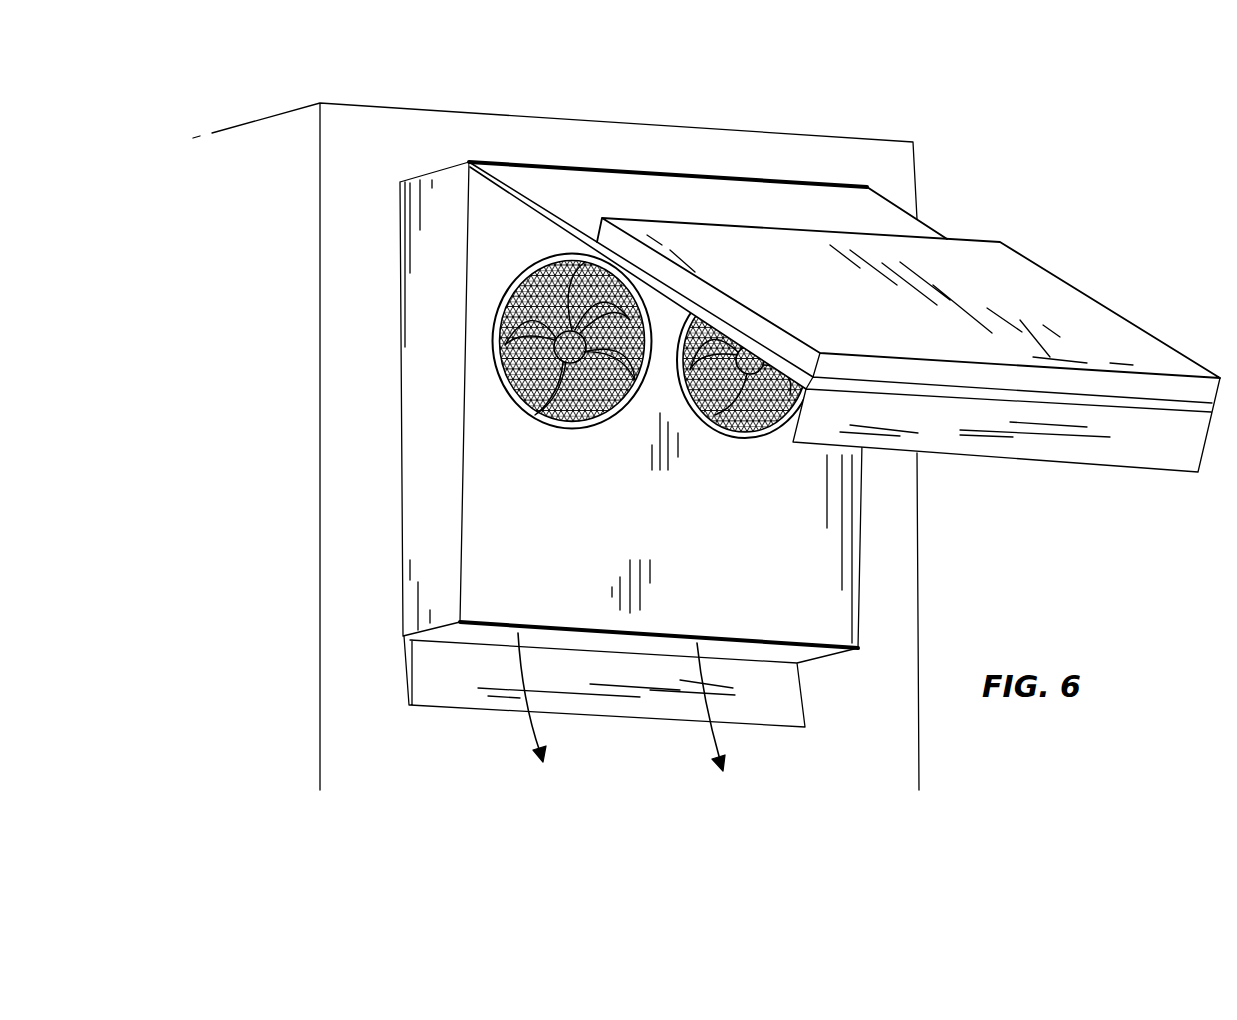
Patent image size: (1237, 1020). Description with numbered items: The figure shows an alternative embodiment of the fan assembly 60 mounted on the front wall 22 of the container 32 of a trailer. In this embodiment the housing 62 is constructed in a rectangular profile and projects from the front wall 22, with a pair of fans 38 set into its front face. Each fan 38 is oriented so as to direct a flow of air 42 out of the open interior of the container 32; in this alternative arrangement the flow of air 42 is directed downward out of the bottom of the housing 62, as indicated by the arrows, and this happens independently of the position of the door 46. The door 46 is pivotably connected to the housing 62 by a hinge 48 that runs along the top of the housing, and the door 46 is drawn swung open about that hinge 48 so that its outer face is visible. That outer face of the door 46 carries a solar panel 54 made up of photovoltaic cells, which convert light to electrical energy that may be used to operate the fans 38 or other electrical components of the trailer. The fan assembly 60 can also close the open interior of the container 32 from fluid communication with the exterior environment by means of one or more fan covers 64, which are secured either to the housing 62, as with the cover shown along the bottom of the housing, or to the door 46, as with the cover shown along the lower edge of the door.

The front wall 22 is at (423, 747).
The container 32 is at (898, 121).
The fan 38 is at (527, 378).
The flow of air 42 is at (528, 723).
The door 46 is at (844, 317).
The hinge 48 is at (777, 184).
The solar panel 54 is at (1067, 237).
The fan assembly 60 is at (384, 299).
The housing 62 is at (430, 422).
The fan cover 64 is at (783, 697).